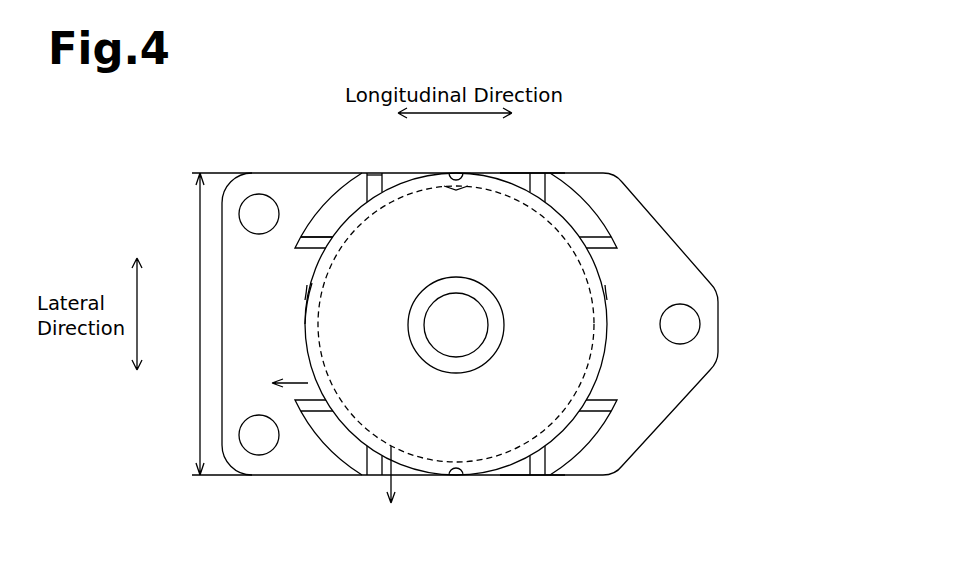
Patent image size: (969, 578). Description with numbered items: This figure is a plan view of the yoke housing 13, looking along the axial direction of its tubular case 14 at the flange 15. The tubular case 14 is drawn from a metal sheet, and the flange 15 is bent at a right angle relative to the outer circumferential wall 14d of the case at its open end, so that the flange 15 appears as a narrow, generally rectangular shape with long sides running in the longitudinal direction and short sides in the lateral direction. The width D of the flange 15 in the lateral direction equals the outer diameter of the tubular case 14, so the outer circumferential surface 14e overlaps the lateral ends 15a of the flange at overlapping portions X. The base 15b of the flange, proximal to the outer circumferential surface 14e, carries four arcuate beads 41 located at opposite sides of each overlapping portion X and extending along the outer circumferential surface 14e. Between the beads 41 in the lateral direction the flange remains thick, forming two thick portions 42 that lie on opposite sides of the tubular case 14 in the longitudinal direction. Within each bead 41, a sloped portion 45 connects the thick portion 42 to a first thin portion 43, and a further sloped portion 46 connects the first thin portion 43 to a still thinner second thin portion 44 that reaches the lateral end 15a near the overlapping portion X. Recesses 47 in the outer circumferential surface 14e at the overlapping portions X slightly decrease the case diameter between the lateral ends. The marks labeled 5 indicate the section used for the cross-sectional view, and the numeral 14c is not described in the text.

The yoke housing 13 is at (730, 133).
The flange 15 is at (655, 217).
The lateral ends 15a is at (537, 176).
The base 15b is at (300, 340).
The tubular case 14 is at (607, 358).
The hub / shaft bore 14c is at (456, 277).
The outer circumferential wall 14d is at (411, 324).
The outer circumferential surface 14e is at (306, 298).
The beads 41 is at (335, 212).
The thick portions 42 is at (300, 283).
The first thin portion 43 is at (347, 193).
The second thin portion 44 is at (388, 177).
The sloped portion 45 is at (323, 240).
The further sloped portion 46 is at (375, 180).
The recesses 47 is at (455, 177).
The overlapping portions X is at (458, 177).
The section line V-V 5 is at (323, 451).
The width D is at (199, 308).